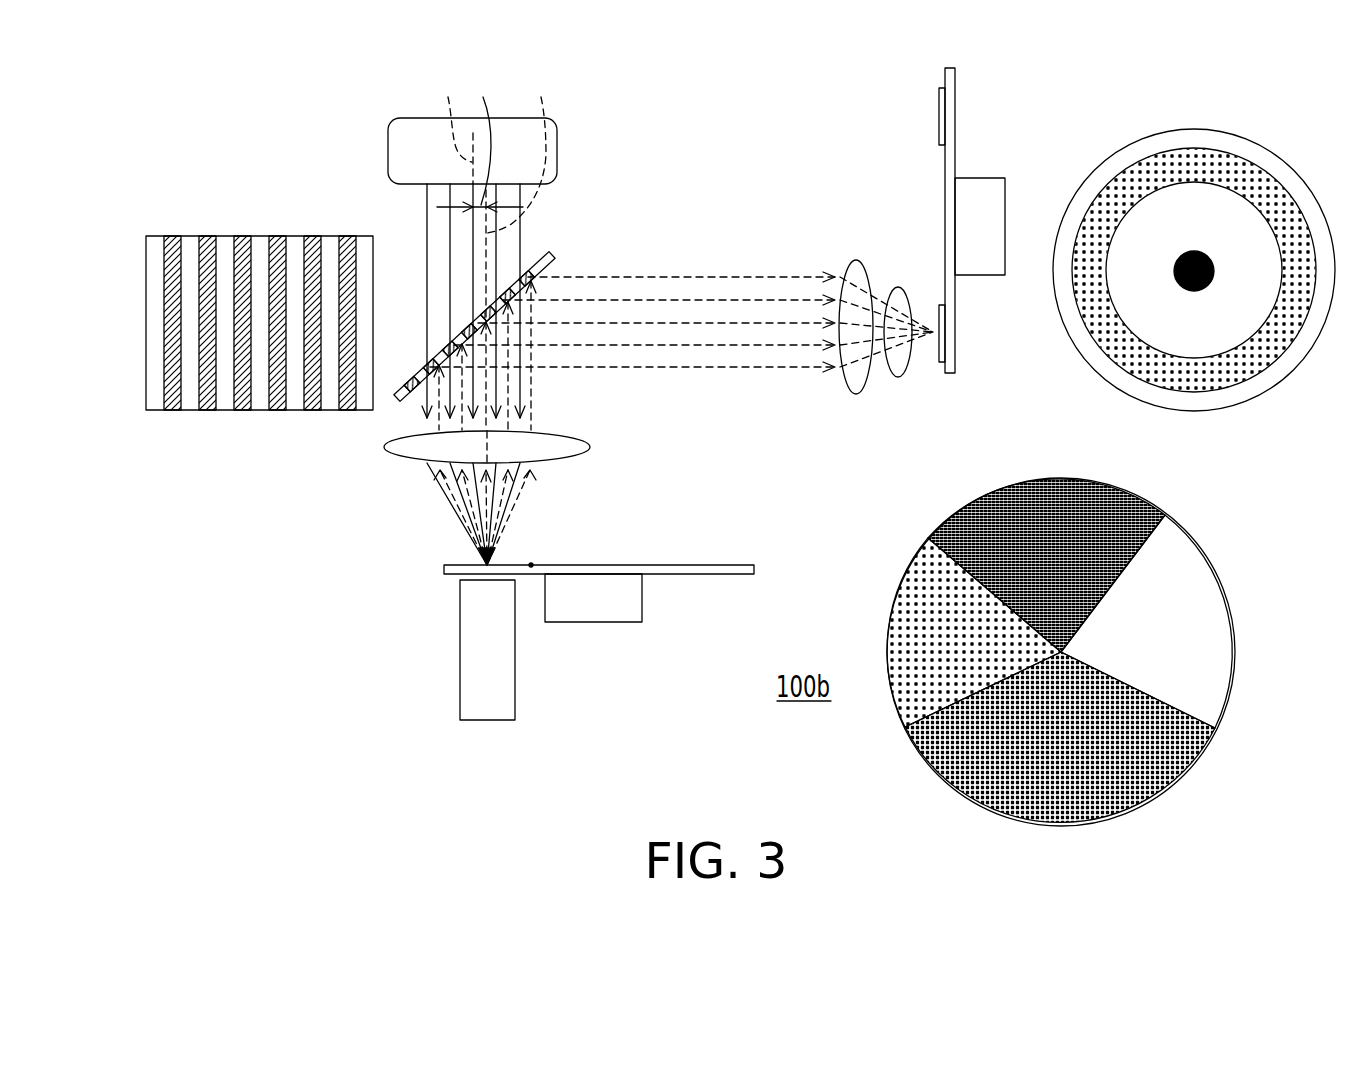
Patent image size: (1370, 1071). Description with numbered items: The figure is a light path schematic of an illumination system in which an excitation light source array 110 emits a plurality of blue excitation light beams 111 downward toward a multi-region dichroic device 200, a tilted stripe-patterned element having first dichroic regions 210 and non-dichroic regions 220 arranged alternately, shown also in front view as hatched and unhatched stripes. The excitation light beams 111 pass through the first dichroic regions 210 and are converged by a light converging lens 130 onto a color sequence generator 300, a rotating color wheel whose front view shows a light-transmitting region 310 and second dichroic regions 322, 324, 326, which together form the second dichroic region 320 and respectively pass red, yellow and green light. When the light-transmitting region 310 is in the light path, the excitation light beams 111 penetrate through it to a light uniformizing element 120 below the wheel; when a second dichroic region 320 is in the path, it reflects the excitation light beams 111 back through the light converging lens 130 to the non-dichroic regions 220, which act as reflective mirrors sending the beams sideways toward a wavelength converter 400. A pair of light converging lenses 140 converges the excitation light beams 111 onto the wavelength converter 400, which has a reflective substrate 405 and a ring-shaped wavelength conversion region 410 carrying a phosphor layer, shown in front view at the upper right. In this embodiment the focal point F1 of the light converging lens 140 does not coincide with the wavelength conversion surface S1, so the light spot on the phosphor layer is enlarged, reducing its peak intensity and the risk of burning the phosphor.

The excitation light source array 110 is at (557, 148).
The excitation light beams 111 is at (450, 222).
The light uniformizing element 120 is at (494, 700).
The light converging lens 130 is at (590, 445).
The light converging lens 140 is at (875, 268).
The multi-region dichroic device 200 is at (374, 332).
The first dichroic regions 210 is at (257, 236).
The non-dichroic regions 220 is at (242, 236).
The color sequence generator 300 is at (707, 575).
The light-transmitting region 310 is at (930, 567).
The second dichroic region 320 is at (1115, 634).
The second dichroic region 322 is at (1022, 495).
The second dichroic region 324 is at (1210, 587).
The second dichroic region 326 is at (1195, 750).
The wavelength converter 400 is at (1106, 264).
The reflective substrate 405 is at (955, 130).
The wavelength conversion region 410 is at (940, 106).
The focal point F1 is at (928, 320).
The wavelength conversion surface S1 is at (938, 360).